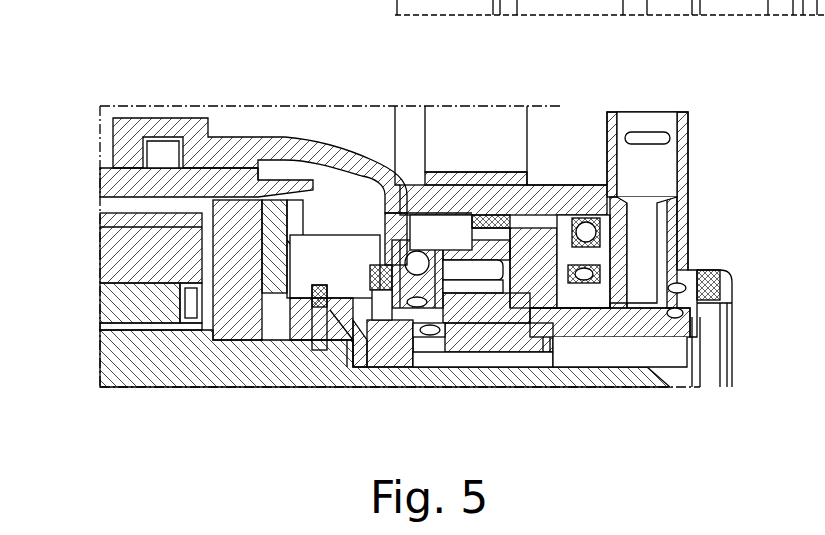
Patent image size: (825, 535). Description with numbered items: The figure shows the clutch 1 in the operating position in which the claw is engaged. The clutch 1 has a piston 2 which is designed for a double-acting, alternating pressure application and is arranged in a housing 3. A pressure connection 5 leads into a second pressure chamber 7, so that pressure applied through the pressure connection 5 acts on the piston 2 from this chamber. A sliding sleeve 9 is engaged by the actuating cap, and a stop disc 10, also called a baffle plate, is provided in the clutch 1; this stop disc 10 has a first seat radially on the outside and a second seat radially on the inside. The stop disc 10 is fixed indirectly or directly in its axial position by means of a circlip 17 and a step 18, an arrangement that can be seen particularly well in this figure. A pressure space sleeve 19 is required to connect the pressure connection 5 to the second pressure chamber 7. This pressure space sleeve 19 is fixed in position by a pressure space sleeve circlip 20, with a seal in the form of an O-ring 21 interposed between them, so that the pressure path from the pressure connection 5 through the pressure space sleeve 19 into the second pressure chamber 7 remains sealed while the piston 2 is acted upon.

The clutch 1 is at (249, 72).
The piston 2 is at (427, 226).
The housing 3 is at (517, 300).
The pressure connection 5 is at (660, 220).
The second pressure chamber 7 is at (530, 262).
The sliding sleeve 9 is at (168, 180).
The stop disc 10 is at (406, 298).
The circlip 17 is at (385, 300).
The step 18 is at (452, 300).
The pressure space sleeve 19 is at (543, 330).
The pressure space sleeve circlip 20 is at (732, 305).
The O-ring 21 is at (675, 318).